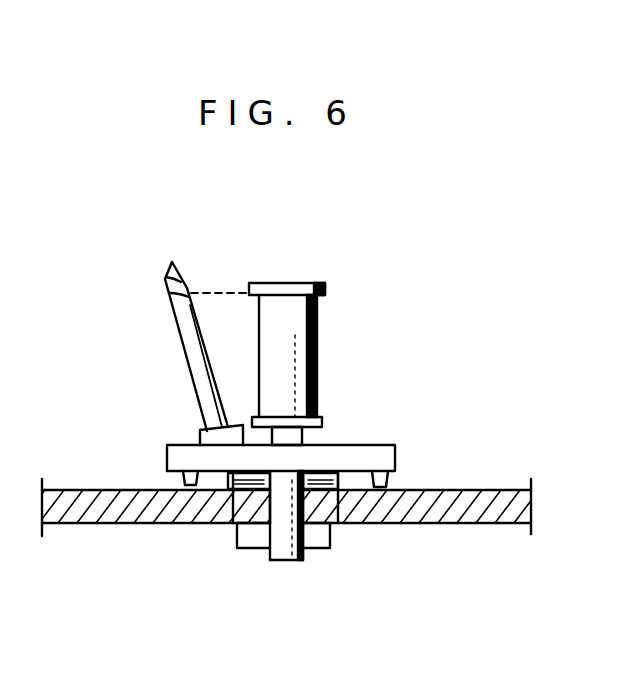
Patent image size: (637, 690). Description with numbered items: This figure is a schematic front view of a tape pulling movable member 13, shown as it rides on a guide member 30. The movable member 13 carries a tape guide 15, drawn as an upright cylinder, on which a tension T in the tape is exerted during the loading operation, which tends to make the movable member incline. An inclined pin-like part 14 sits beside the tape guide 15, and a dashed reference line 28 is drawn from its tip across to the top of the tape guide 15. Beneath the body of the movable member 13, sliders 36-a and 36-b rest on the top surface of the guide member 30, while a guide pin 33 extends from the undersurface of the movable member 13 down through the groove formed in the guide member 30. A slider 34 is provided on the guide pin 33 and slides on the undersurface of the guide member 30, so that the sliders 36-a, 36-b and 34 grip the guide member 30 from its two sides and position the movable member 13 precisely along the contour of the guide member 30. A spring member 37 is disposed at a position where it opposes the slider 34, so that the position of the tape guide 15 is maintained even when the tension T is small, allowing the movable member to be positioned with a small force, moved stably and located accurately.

The tape pulling movable member 13 is at (372, 445).
The stylus 14 is at (167, 267).
The tape guide 15 is at (307, 283).
The reference level line 28 is at (202, 293).
The guide member 30 is at (492, 523).
The guide pin 33 is at (281, 560).
The slider 34 is at (322, 546).
The slider 36-a is at (388, 485).
The slider 36-b is at (182, 480).
The spring member 37 is at (232, 492).